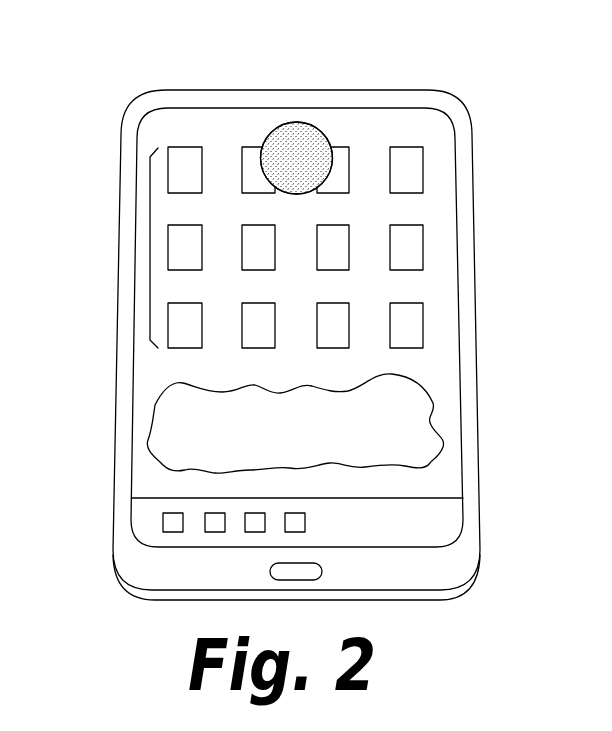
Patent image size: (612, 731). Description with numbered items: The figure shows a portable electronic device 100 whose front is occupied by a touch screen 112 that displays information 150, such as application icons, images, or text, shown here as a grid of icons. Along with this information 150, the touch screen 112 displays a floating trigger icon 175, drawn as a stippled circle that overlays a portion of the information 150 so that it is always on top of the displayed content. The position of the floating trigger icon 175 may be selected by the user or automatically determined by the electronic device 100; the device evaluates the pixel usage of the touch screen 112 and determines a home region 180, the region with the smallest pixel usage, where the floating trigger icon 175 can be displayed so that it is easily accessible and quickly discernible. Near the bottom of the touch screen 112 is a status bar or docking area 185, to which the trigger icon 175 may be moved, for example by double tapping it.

The electronic device 100 is at (98, 128).
The touch screen 112 is at (435, 368).
The information 150 is at (152, 247).
The floating trigger icon 175 is at (297, 137).
The home region 180 is at (190, 432).
The docking area 185 is at (420, 522).